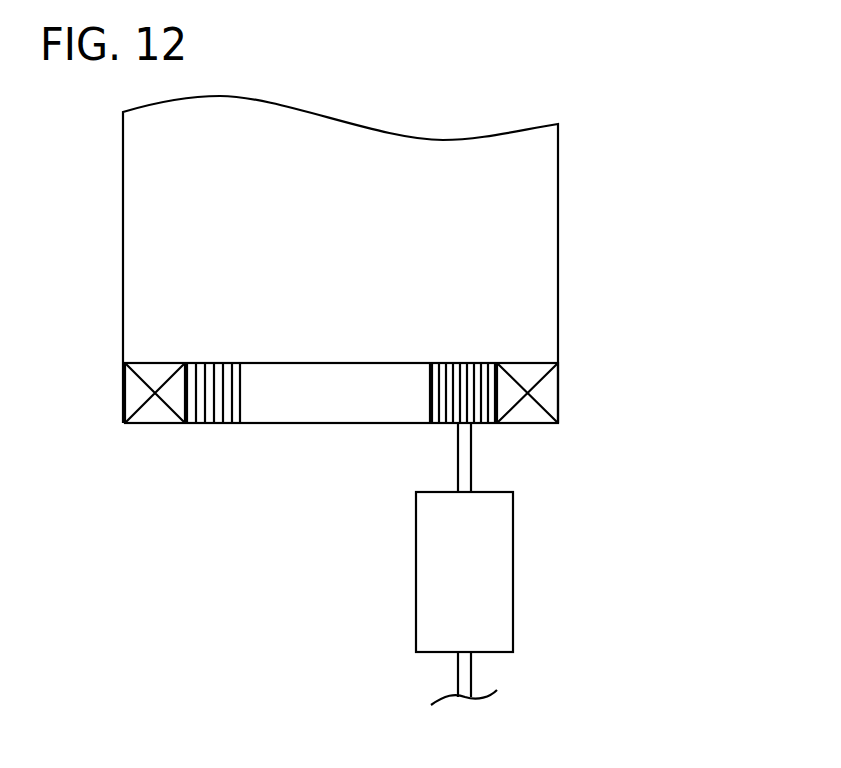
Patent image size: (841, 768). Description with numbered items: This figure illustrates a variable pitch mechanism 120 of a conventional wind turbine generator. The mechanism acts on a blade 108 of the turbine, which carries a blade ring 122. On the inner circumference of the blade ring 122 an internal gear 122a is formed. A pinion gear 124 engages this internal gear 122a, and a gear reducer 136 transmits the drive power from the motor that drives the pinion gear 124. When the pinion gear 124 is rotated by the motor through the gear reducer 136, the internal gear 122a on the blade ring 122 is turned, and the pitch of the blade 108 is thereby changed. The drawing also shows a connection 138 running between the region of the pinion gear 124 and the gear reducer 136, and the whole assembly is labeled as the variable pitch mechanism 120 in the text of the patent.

The blade 108 is at (535, 262).
The blade ring 122 is at (396, 439).
The internal gear 122a is at (212, 400).
The pinion gear 124 is at (443, 405).
The lead wires 138 is at (466, 463).
The gear reducer 136 is at (416, 570).
The variable pitch mechanism 120 is at (503, 564).